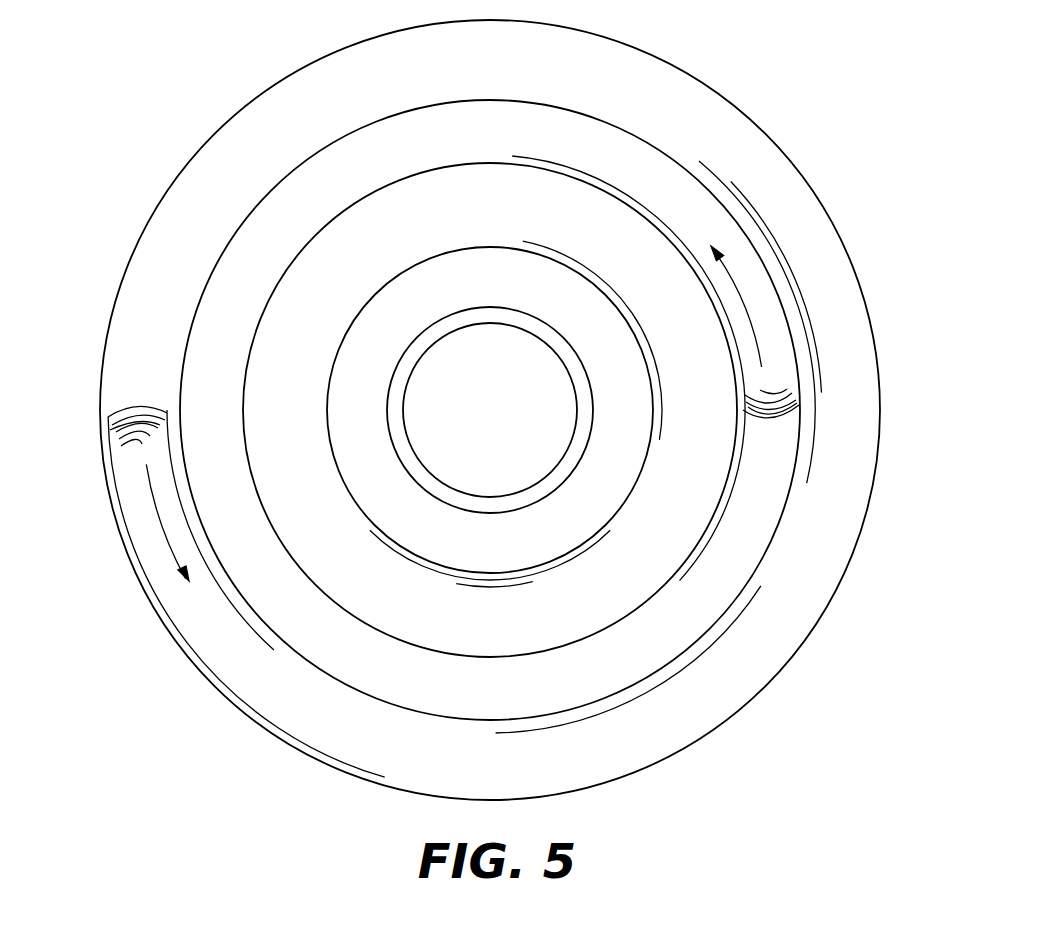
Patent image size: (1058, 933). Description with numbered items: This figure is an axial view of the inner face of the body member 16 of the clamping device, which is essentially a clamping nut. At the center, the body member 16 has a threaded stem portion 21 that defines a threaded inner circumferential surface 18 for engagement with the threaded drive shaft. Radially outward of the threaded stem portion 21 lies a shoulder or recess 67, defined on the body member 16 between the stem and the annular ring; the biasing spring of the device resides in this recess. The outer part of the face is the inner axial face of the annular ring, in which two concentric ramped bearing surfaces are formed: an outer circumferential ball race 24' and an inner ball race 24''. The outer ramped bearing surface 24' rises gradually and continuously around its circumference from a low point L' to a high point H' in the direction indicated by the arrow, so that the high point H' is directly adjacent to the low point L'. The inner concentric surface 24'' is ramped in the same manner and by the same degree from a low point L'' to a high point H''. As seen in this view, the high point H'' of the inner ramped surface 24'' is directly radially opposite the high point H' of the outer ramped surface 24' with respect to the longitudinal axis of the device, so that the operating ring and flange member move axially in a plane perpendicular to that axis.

The body member 16 is at (778, 147).
The outer circumferential ramped bearing surface 24' is at (489, 438).
The inner ramped bearing surface 24'' is at (510, 444).
The shoulder or recess 67 is at (265, 413).
The threaded stem portion 21 is at (465, 285).
The threaded inner circumferential surface 18 is at (433, 342).
The high point of outer ramped bearing surface H' is at (111, 381).
The low point of outer ramped bearing surface L' is at (109, 457).
The low point of inner ramped bearing surface L'' is at (836, 377).
The high point of inner ramped bearing surface H'' is at (845, 455).